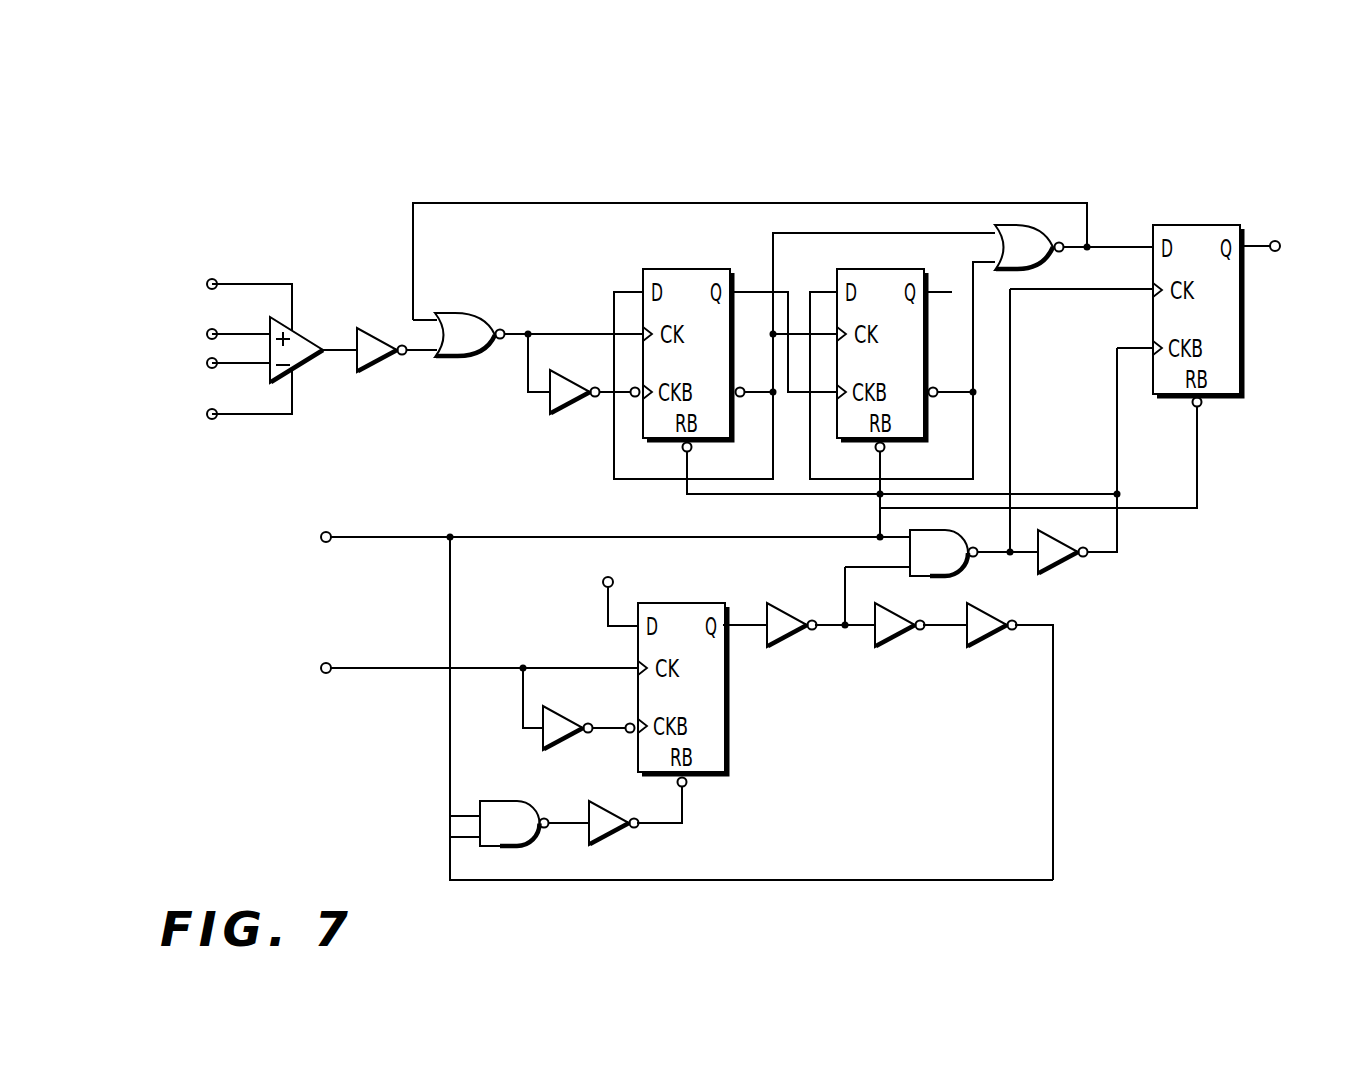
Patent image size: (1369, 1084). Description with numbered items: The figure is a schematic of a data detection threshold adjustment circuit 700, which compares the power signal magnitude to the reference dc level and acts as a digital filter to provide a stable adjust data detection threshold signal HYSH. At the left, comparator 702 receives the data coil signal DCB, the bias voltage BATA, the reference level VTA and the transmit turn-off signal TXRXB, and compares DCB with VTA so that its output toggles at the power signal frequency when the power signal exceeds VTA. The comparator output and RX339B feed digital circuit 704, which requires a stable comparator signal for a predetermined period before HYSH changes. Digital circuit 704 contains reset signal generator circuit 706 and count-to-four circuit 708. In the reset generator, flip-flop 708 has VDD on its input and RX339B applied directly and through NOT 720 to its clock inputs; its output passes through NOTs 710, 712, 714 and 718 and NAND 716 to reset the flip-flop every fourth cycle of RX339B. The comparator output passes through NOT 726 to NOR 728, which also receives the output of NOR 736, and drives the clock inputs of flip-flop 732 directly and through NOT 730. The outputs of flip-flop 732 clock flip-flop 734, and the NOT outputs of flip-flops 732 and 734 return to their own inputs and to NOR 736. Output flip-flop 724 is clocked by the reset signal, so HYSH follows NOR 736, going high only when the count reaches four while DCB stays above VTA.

The circuit 700 is at (906, 144).
The comparator 702 is at (296, 368).
The digital circuit 704 is at (1118, 651).
The reset signal generator circuit 706 is at (920, 904).
The count-to-four circuit 708 is at (725, 700).
The NOT 710 is at (779, 642).
The NOT 712 is at (889, 640).
The NOT 714 is at (983, 640).
The NAND 716 is at (524, 847).
The NOT 718 is at (608, 840).
The NOT 720 is at (968, 568).
The output flip-flop 724 is at (1196, 225).
The NOT 726 is at (373, 365).
The NOR 728 is at (463, 313).
The NOT 730 is at (567, 405).
The flip-flop 732 is at (684, 269).
The flip-flop 734 is at (882, 269).
The NOR 736 is at (1048, 266).